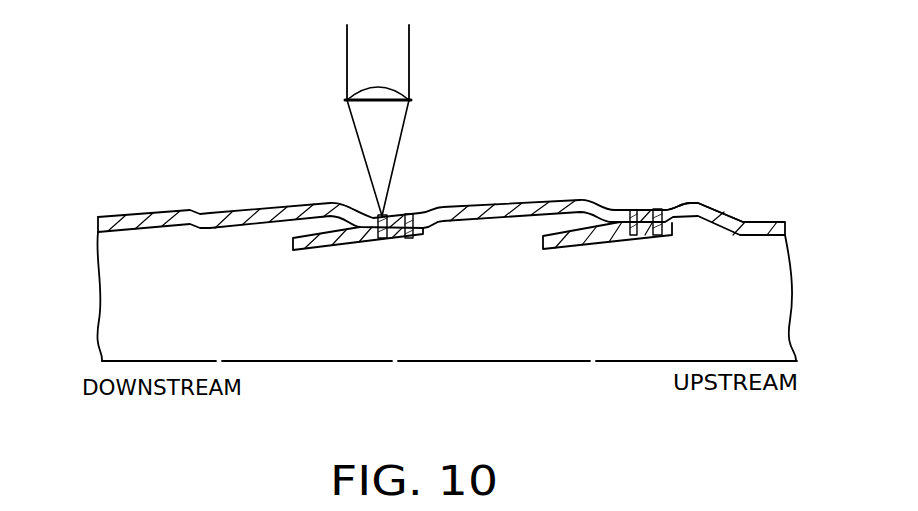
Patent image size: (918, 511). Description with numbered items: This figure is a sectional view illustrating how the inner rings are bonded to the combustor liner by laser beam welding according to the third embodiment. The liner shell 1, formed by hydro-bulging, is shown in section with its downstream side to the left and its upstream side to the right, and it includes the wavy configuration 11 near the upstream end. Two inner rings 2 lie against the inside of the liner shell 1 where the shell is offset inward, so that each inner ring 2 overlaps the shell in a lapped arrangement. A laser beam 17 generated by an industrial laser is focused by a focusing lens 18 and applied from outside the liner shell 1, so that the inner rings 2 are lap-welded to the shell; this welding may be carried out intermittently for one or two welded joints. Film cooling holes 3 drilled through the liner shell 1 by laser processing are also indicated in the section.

The liner shell 1 is at (231, 201).
The inner rings 2 is at (345, 251).
The film cooling holes 3 is at (316, 203).
The wavy configuration 11 is at (700, 201).
The laser beam 17 is at (409, 70).
The focusing lens 18 is at (411, 100).